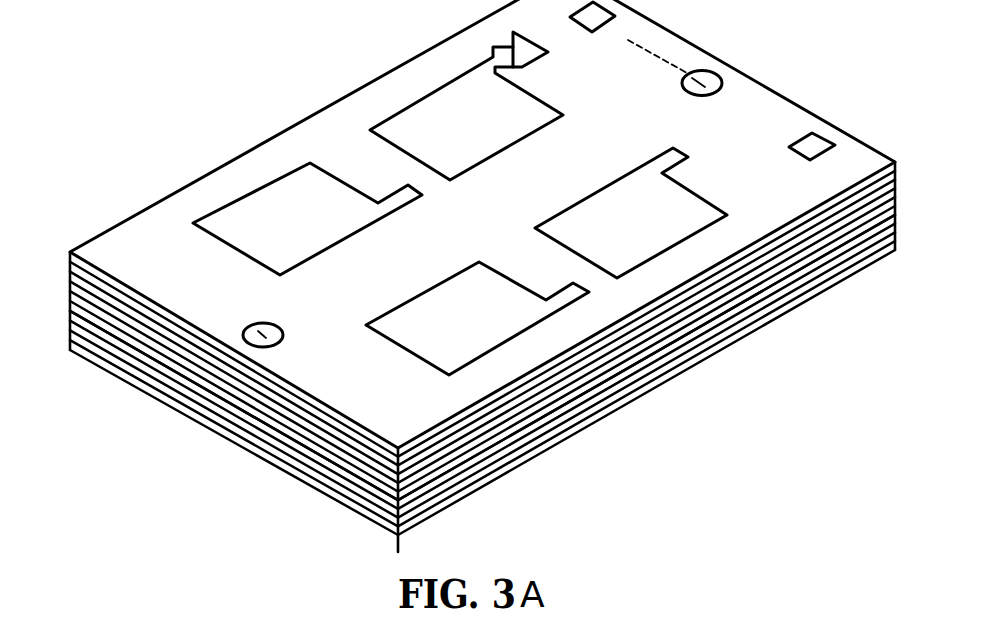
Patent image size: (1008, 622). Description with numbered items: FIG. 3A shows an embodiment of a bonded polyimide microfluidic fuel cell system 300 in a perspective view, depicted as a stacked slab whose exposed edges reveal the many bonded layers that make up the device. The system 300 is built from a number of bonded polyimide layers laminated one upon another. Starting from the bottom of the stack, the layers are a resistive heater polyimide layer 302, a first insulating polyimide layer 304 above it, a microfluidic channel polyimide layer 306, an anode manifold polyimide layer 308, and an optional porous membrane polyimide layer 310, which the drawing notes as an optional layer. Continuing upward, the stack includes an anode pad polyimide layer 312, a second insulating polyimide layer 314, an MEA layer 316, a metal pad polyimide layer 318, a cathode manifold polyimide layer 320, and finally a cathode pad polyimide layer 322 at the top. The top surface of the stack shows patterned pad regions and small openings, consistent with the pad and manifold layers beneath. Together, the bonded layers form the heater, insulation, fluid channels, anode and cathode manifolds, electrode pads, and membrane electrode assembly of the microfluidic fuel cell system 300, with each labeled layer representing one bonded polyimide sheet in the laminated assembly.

The bonded polyimide microfluidic fuel cell system 300 is at (234, 73).
The resistive heater polyimide layer 302 is at (377, 513).
The first insulating polyimide layer 304 is at (433, 500).
The microfluidic channel polyimide layer 306 is at (320, 465).
The anode manifold polyimide layer 308 is at (479, 455).
The optional porous membrane polyimide layer 310 is at (584, 448).
The anode pad polyimide layer 312 is at (270, 418).
The second insulating polyimide layer 314 is at (619, 358).
The MEA layer 316 is at (210, 368).
The metal pad polyimide layer 318 is at (699, 295).
The cathode manifold polyimide layer 320 is at (167, 322).
The cathode pad polyimide layer 322 is at (782, 233).